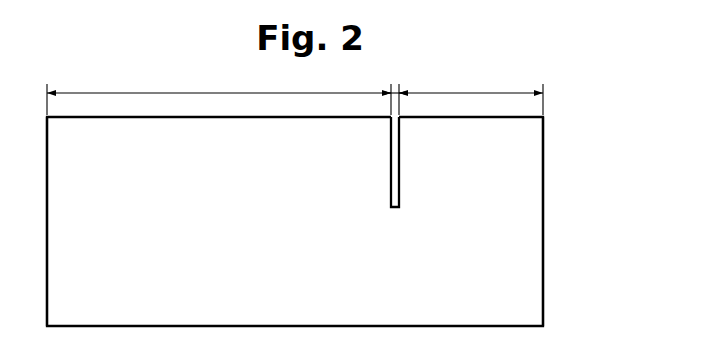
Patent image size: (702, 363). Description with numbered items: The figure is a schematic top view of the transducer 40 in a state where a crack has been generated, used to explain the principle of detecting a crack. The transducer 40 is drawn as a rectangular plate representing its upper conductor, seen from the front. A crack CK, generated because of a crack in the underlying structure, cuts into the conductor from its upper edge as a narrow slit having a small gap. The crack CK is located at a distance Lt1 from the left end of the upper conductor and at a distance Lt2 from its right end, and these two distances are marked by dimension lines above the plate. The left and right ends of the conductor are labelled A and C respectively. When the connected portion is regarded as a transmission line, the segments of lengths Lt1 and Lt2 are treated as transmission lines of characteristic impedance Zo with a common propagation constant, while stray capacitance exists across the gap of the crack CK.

The transducer 40 is at (532, 178).
The crack CK is at (397, 165).
The end point A of the plate A is at (34, 221).
The end point C of the plate C is at (552, 221).
The length from left end to crack Lt1 is at (219, 93).
The length from crack to right end Lt2 is at (471, 93).